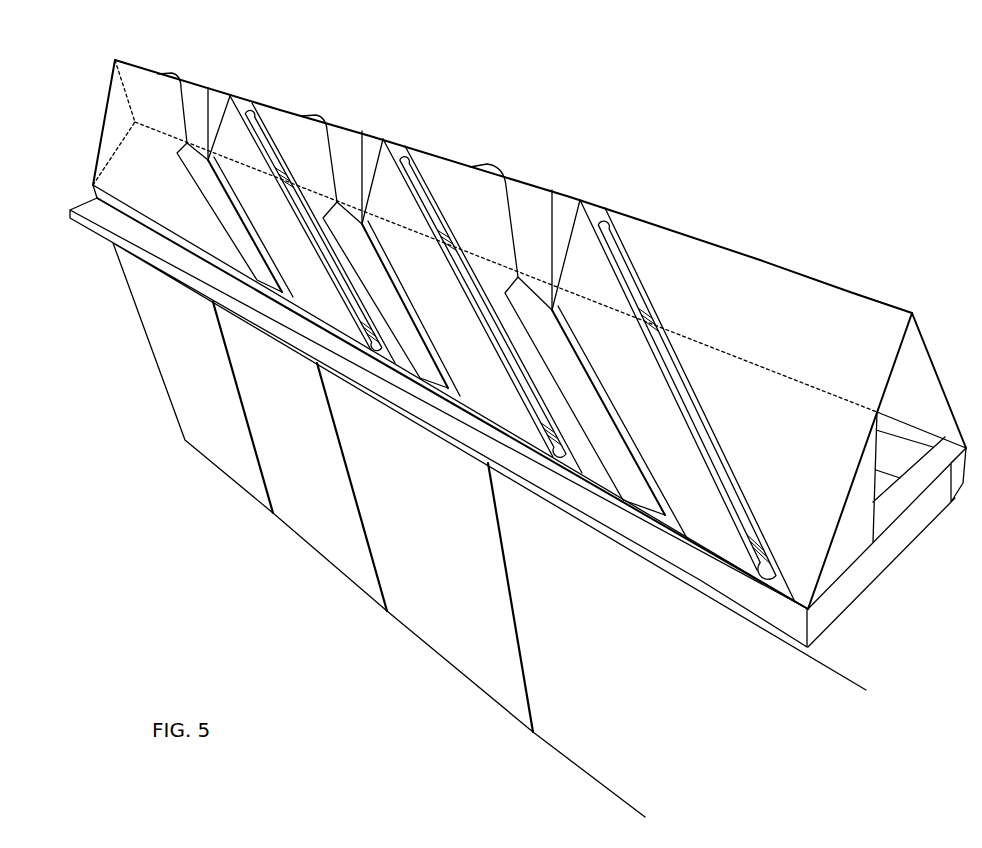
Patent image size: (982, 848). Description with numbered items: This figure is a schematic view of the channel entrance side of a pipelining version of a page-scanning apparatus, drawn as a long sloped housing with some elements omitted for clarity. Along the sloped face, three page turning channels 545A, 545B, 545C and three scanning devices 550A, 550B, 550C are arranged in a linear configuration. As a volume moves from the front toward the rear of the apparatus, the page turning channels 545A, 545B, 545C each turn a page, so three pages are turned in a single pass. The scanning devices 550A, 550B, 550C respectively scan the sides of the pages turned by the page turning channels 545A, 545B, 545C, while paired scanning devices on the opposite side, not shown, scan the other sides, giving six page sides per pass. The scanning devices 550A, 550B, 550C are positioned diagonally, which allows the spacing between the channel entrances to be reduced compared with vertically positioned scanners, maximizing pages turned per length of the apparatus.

The page turning channel 545A is at (535, 220).
The page turning channel 545B is at (338, 160).
The page turning channel 545C is at (190, 108).
The scanning device 550A is at (615, 245).
The scanning device 550B is at (425, 190).
The scanning device 550C is at (268, 138).